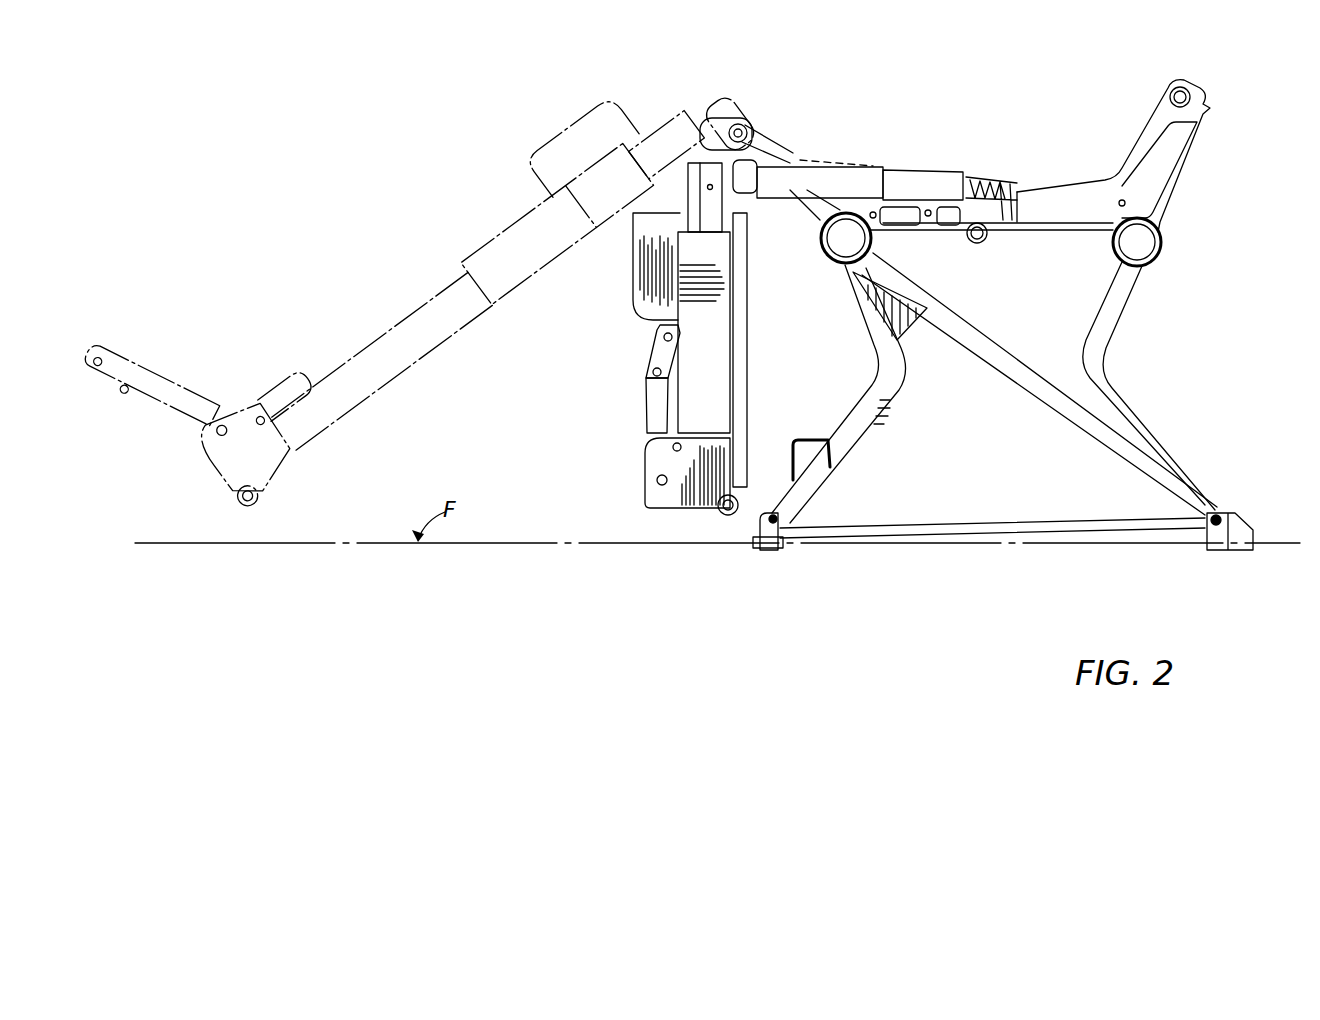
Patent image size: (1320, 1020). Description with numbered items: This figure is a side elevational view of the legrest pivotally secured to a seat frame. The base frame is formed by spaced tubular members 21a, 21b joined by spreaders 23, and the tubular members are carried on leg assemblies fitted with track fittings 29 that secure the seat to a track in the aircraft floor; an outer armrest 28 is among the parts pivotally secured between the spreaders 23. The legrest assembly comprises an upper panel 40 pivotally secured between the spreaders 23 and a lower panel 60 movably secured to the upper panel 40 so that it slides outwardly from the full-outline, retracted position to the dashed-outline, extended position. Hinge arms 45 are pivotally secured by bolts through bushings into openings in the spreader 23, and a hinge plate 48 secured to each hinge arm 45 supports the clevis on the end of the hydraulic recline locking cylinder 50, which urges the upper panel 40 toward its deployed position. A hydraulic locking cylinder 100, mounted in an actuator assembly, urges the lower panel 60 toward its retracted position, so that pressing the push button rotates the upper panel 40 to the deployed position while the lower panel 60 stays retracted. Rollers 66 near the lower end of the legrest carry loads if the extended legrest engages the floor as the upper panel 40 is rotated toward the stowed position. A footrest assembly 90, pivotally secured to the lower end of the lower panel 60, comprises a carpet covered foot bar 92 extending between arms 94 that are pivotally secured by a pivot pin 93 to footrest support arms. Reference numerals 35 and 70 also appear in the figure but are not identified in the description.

The tubular member 21a is at (875, 250).
The tubular member 21b is at (1163, 245).
The spreader 23 is at (1072, 200).
The outer armrest 28 is at (848, 455).
The track fitting 29 is at (788, 548).
The housing 35 is at (600, 128).
The upper panel 40 is at (540, 221).
The hinge arm 45 is at (728, 125).
The hinge plate 48 is at (745, 195).
The hydraulic recline locking cylinder 50 is at (783, 152).
The lower panel 60 is at (653, 506).
The roller 66 is at (738, 498).
The bracket 70 is at (278, 385).
The footrest assembly 90 is at (102, 354).
The foot bar 92 is at (660, 352).
The pivot pin 93 is at (660, 478).
The arm 94 is at (655, 398).
The hydraulic locking cylinder 100 is at (752, 318).